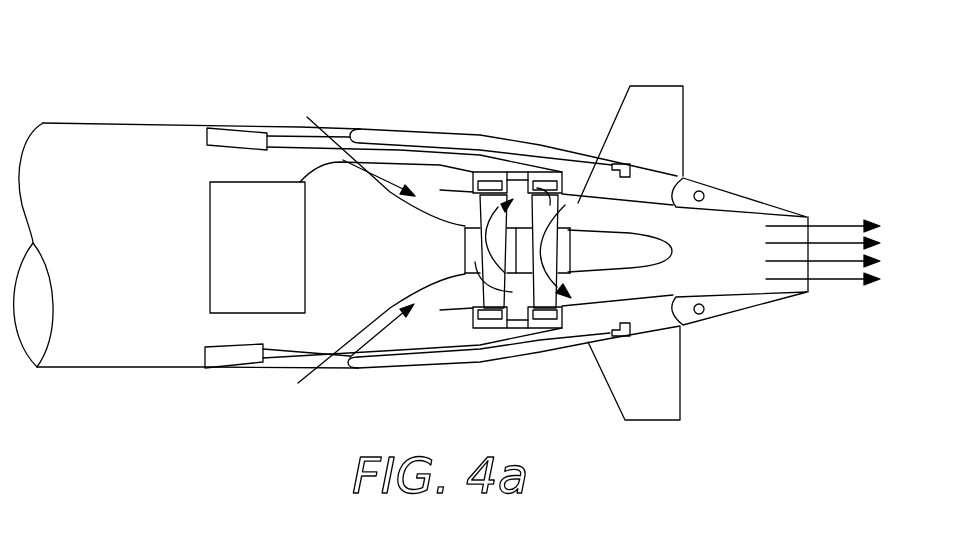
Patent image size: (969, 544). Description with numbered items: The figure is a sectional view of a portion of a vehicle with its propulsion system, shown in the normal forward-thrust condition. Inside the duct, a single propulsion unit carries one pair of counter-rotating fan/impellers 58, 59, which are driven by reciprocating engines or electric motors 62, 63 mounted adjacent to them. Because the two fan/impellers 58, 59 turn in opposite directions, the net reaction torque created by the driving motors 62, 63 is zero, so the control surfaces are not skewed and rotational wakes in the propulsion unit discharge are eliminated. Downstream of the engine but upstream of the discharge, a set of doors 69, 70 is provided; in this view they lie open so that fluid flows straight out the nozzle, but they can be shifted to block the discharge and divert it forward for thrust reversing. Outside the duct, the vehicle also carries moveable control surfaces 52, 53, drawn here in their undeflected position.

The control surface 52 is at (683, 390).
The control surface 53 is at (685, 118).
The counter-rotating fan/impeller 58 is at (470, 192).
The counter-rotating fan/impeller 59 is at (560, 217).
The electric motor 62 is at (472, 190).
The electric motor 63 is at (553, 215).
The door 69 is at (717, 193).
The door 70 is at (708, 315).